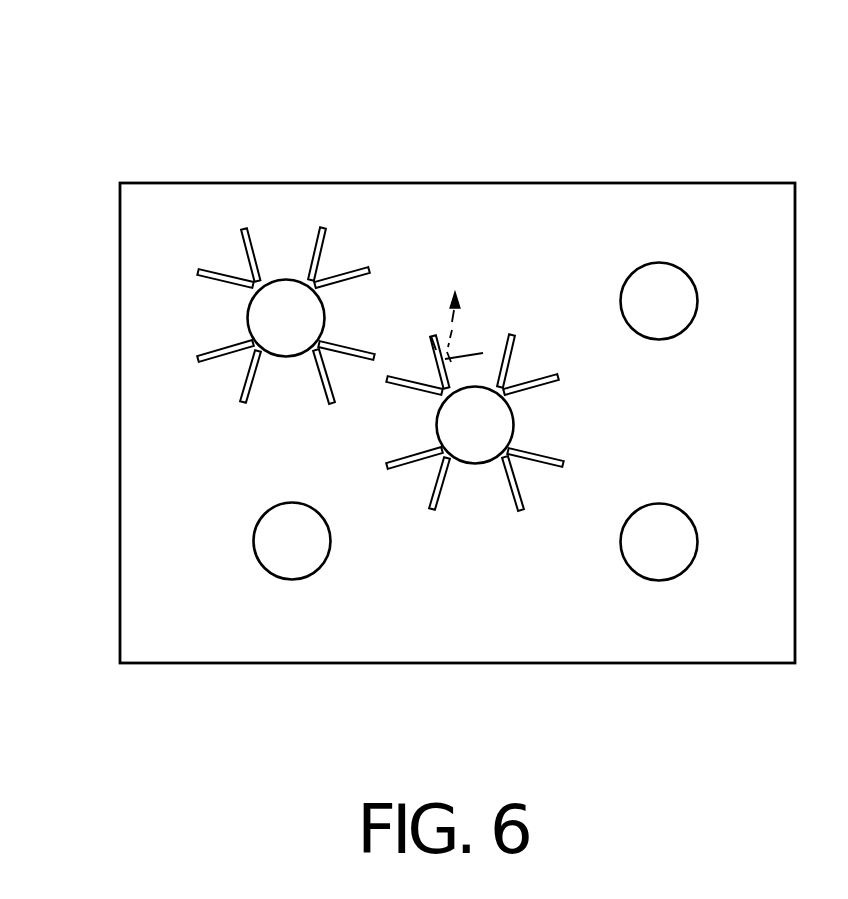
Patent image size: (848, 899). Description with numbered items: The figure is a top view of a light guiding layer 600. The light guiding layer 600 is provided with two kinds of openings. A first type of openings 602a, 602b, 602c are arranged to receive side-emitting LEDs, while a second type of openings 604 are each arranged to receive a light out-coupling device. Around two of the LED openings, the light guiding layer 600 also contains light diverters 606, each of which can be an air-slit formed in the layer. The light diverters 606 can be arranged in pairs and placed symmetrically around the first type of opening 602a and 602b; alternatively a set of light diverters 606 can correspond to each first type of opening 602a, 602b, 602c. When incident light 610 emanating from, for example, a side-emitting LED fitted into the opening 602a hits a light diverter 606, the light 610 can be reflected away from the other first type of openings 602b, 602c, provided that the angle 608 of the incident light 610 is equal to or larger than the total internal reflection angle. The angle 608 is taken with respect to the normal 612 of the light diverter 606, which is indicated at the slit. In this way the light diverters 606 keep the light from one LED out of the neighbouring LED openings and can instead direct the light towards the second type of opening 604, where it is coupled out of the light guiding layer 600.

The light guiding layer 600 is at (121, 148).
The first type of opening 602a is at (547, 474).
The first type of opening 602b is at (284, 282).
The first type of opening 602c is at (293, 580).
The second type of opening 604 is at (658, 262).
The light diverter 606 is at (547, 474).
The angle of the incident light 608 is at (444, 343).
The incident light 610 is at (457, 290).
The normal of a light diverter 612 is at (470, 354).